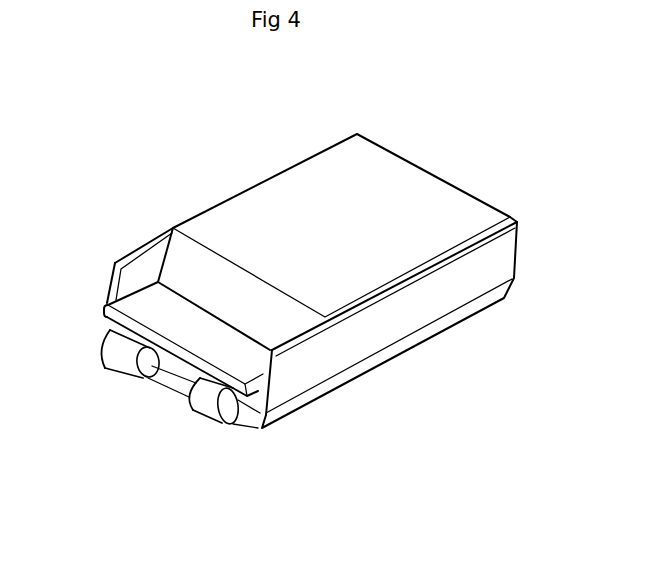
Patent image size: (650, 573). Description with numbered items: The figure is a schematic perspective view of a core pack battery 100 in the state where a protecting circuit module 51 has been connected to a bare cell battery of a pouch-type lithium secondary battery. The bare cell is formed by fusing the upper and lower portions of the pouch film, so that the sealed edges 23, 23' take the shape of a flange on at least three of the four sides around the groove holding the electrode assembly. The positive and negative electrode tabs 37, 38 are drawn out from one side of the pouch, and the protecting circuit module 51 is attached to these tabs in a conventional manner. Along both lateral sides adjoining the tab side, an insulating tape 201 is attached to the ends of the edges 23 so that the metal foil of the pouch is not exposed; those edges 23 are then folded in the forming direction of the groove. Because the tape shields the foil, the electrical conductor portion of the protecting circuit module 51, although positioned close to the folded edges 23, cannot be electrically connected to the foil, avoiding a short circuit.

The core pack battery 100 is at (209, 163).
The insulating tape 201 is at (443, 302).
The edge 23 is at (389, 325).
The edge 23' is at (148, 395).
The protecting circuit module 51 is at (135, 304).
The positive electrode tab 37 is at (118, 350).
The negative electrode tab 38 is at (203, 407).